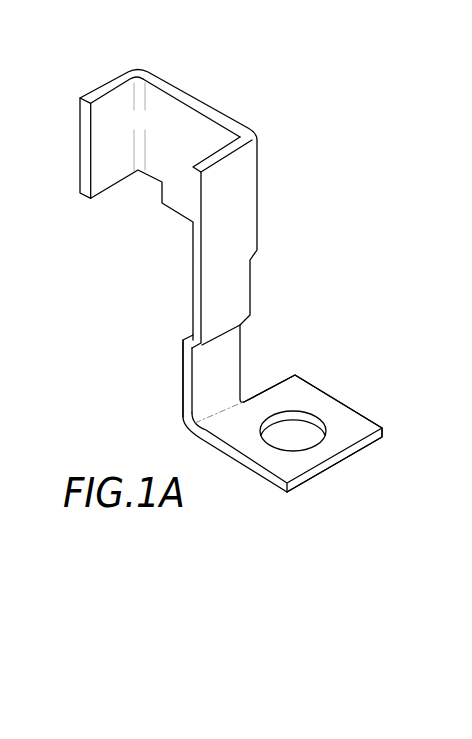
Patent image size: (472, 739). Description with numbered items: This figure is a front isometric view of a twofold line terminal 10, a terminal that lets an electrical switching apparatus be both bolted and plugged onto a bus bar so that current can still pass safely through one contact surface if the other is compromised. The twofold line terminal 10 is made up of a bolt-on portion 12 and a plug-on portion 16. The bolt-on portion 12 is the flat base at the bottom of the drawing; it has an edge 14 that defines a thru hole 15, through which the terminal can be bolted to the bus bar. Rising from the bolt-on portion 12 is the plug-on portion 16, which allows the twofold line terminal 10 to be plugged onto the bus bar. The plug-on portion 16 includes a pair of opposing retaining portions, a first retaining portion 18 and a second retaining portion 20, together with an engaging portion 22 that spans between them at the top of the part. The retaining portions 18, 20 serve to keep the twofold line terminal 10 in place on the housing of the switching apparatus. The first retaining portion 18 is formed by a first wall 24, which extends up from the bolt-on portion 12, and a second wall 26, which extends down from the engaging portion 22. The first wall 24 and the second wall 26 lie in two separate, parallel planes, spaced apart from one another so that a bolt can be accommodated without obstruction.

The twofold line terminal 10 is at (93, 261).
The bolt-on portion 12 is at (298, 390).
The edge 14 is at (317, 411).
The thru hole 15 is at (303, 437).
The plug-on portion 16 is at (120, 392).
The first retaining portion 18 is at (144, 341).
The second retaining portion 20 is at (108, 131).
The engaging portion 22 is at (188, 118).
The first wall 24 is at (228, 352).
The second wall 26 is at (238, 275).